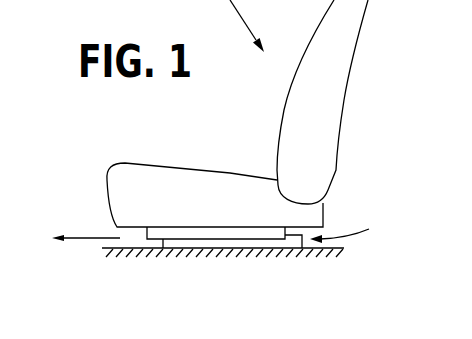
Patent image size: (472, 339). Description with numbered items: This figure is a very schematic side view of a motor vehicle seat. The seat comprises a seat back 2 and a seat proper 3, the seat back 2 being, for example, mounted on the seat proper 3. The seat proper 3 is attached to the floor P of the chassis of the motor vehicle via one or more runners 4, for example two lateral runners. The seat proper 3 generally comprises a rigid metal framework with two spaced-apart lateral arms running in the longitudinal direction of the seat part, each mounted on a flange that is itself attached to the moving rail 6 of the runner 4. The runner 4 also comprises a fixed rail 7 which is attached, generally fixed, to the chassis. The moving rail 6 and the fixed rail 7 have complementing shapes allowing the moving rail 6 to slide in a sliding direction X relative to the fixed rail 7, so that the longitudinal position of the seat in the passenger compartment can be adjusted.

The seat back 2 is at (349, 43).
The seat proper 3 is at (163, 178).
The runner 4 is at (346, 221).
The moving rail 6 is at (192, 233).
The fixed rail 7 is at (251, 243).
The floor P is at (314, 252).
The sliding direction X is at (75, 238).